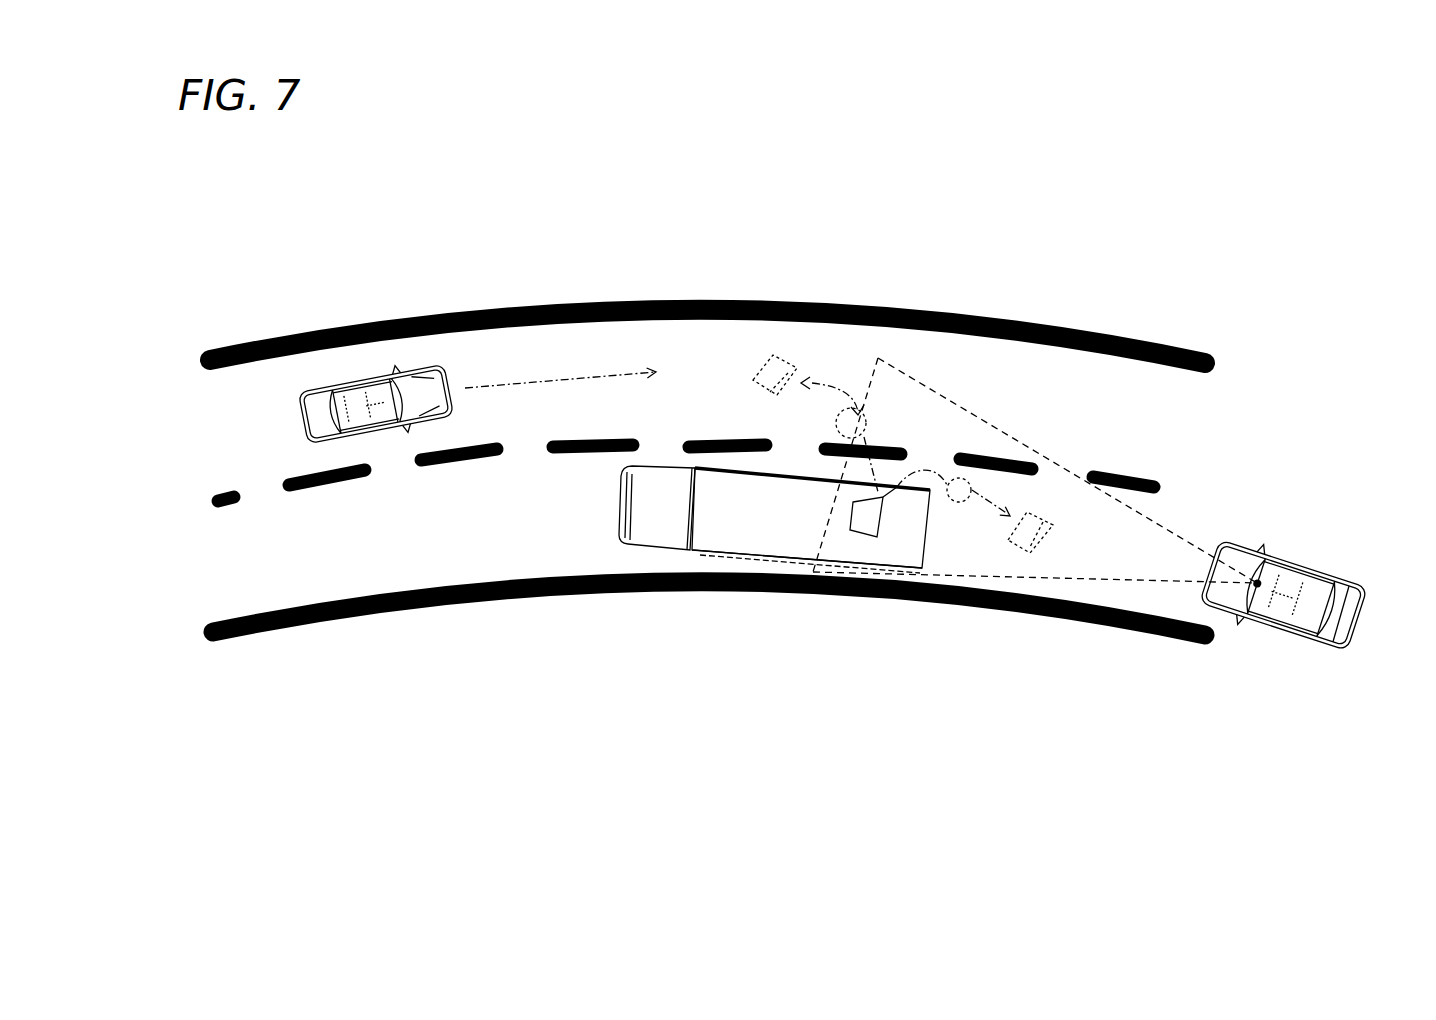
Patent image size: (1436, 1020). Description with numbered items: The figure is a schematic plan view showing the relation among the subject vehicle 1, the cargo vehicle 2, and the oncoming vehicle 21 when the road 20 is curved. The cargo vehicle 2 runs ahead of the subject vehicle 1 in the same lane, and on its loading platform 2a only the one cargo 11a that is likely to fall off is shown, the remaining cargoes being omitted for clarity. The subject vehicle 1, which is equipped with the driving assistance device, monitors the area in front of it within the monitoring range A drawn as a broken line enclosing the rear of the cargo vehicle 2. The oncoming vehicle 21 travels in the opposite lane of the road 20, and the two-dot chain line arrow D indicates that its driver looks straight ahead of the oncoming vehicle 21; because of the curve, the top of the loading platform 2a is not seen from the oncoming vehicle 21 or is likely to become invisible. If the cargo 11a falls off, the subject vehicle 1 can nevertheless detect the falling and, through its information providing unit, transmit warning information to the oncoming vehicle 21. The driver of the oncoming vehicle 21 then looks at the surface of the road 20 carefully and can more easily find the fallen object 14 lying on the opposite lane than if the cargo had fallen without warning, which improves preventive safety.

The subject vehicle 1 is at (1305, 560).
The cargo vehicle 2 is at (647, 502).
The loading platform 2a is at (792, 558).
The cargo 11a is at (867, 512).
The fallen object 14 is at (788, 362).
The road 20 is at (1034, 290).
The oncoming vehicle 21 is at (298, 416).
The monitoring range A is at (1047, 457).
The two-dot chain line arrow D is at (545, 380).